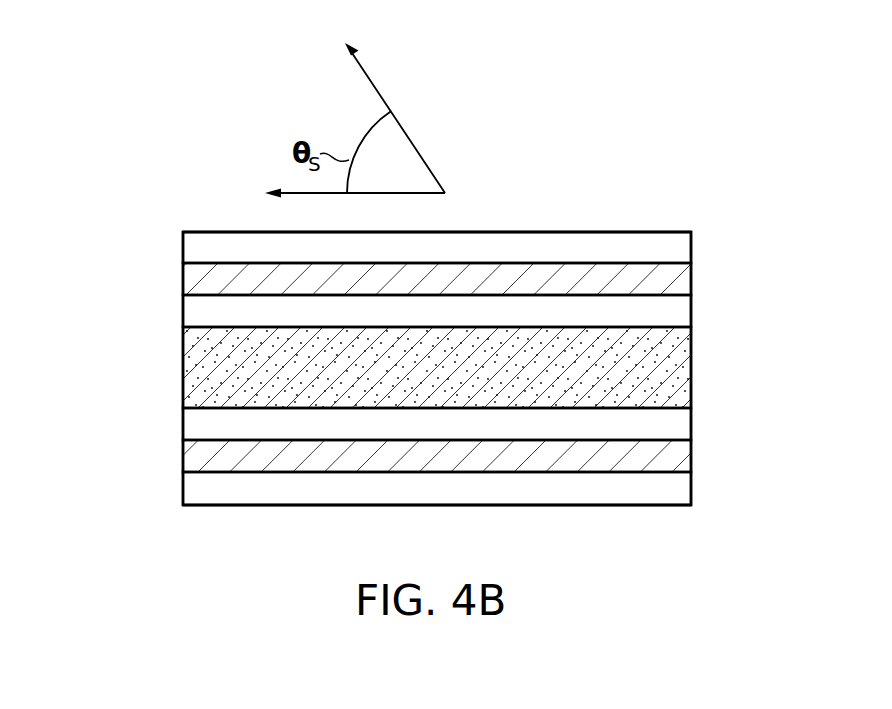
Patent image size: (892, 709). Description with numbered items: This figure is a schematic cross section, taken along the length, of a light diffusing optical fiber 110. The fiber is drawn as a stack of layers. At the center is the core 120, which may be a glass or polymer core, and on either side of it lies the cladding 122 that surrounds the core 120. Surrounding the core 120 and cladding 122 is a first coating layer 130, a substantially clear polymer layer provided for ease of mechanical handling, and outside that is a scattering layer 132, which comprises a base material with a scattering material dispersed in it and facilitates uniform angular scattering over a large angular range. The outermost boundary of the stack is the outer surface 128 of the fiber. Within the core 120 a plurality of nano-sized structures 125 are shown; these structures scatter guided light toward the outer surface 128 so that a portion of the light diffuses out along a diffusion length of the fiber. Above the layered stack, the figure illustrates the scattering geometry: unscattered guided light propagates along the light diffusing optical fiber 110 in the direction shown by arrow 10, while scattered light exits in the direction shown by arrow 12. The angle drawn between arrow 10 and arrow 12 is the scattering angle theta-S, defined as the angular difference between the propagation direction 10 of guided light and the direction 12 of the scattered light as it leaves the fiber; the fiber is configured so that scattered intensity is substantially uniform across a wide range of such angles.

The light diffusing optical fiber 110 is at (600, 175).
The scattering layer 132 is at (691, 247).
The first coating layer 130 is at (183, 280).
The cladding 122 is at (691, 310).
The core 120 is at (691, 368).
The nano-sized structures 125 is at (211, 375).
The outer surface 128 is at (497, 230).
The arrow indicating propagation direction of guided light 10 is at (340, 193).
The arrow indicating direction of scattered light 12 is at (383, 104).